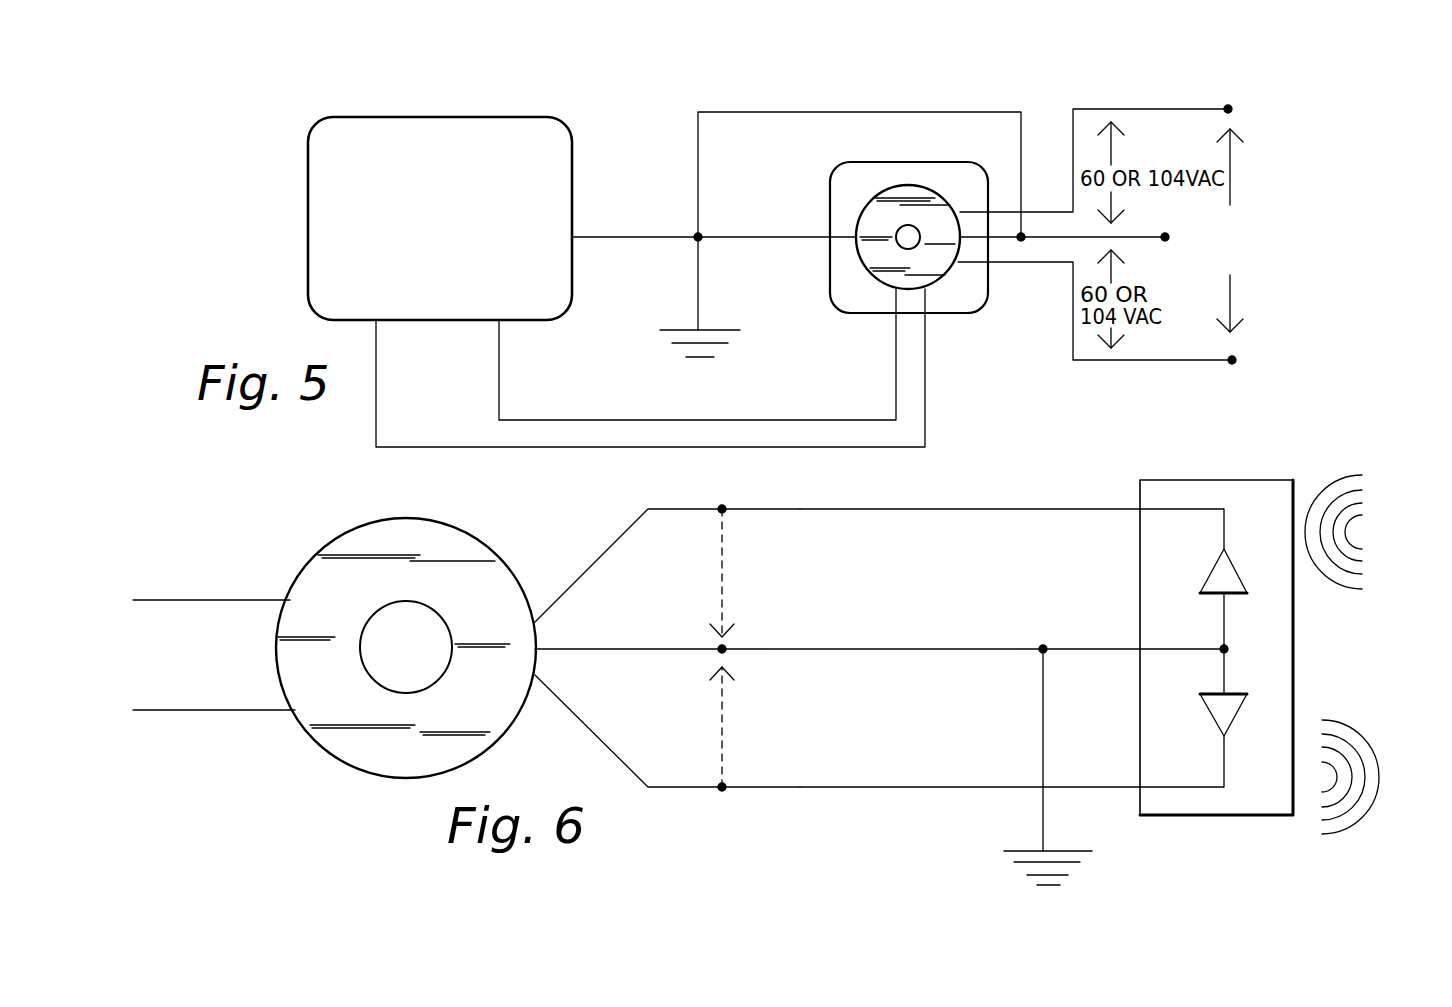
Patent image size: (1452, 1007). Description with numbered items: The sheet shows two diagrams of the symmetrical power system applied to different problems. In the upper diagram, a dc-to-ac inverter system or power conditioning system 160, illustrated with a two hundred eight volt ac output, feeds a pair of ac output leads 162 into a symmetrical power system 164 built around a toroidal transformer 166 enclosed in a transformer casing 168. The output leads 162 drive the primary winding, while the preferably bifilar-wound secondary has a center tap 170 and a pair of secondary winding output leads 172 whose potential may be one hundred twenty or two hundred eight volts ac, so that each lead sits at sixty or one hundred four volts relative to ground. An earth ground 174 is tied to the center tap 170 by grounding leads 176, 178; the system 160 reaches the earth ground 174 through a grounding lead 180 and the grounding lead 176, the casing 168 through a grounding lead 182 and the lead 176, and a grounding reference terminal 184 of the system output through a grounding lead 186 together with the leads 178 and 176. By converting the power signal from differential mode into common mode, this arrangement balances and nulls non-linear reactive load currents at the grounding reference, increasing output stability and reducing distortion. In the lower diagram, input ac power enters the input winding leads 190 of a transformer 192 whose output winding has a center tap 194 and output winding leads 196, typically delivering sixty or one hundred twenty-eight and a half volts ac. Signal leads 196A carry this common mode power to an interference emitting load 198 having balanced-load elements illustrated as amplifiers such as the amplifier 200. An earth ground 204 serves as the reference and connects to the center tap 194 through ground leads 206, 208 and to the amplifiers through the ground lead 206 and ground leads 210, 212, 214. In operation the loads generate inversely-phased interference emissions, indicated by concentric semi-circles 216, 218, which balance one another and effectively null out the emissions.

In FIG. 5, the dc-to-ac inverter system or power conditioning system 160 is at (308, 228).
In FIG. 5, the ac output leads 162 is at (376, 407).
In FIG. 5, the symmetrical power system 164 is at (866, 146).
In FIG. 5, the transformer 166 is at (873, 275).
In FIG. 5, the transformer casing 168 is at (888, 162).
In FIG. 5, the center tap 170 is at (1021, 247).
In FIG. 5, the secondary winding output leads 172 is at (1145, 109).
In FIG. 5, the earth ground 174 is at (690, 330).
In FIG. 5, the grounding lead 176 is at (700, 297).
In FIG. 5, the grounding lead 178 is at (698, 143).
In FIG. 5, the grounding lead 180 is at (600, 237).
In FIG. 5, the grounding lead 182 is at (748, 237).
In FIG. 5, the grounding reference terminal 184 is at (1165, 237).
In FIG. 5, the grounding lead 186 is at (1147, 237).
In FIG. 6, the input winding leads 190 is at (160, 598).
In FIG. 6, the transformer 192 is at (425, 518).
In FIG. 6, the center tap 194 is at (725, 648).
In FIG. 6, the output winding leads 196 is at (668, 509).
In FIG. 6, the signal leads 196A is at (937, 508).
In FIG. 6, the interference emitting load 198 is at (1145, 480).
In FIG. 6, the amplifier 200 is at (1225, 548).
In FIG. 6, the earth ground 204 is at (1075, 851).
In FIG. 6, the ground lead 206 is at (1045, 836).
In FIG. 6, the ground lead 208 is at (870, 649).
In FIG. 6, the ground lead 210 is at (1085, 648).
In FIG. 6, the ground lead 212 is at (1226, 630).
In FIG. 6, the ground lead 214 is at (1226, 680).
In FIG. 6, the concentric semi-circles 216 is at (1347, 530).
In FIG. 6, the concentric semi-circles 218 is at (1355, 728).